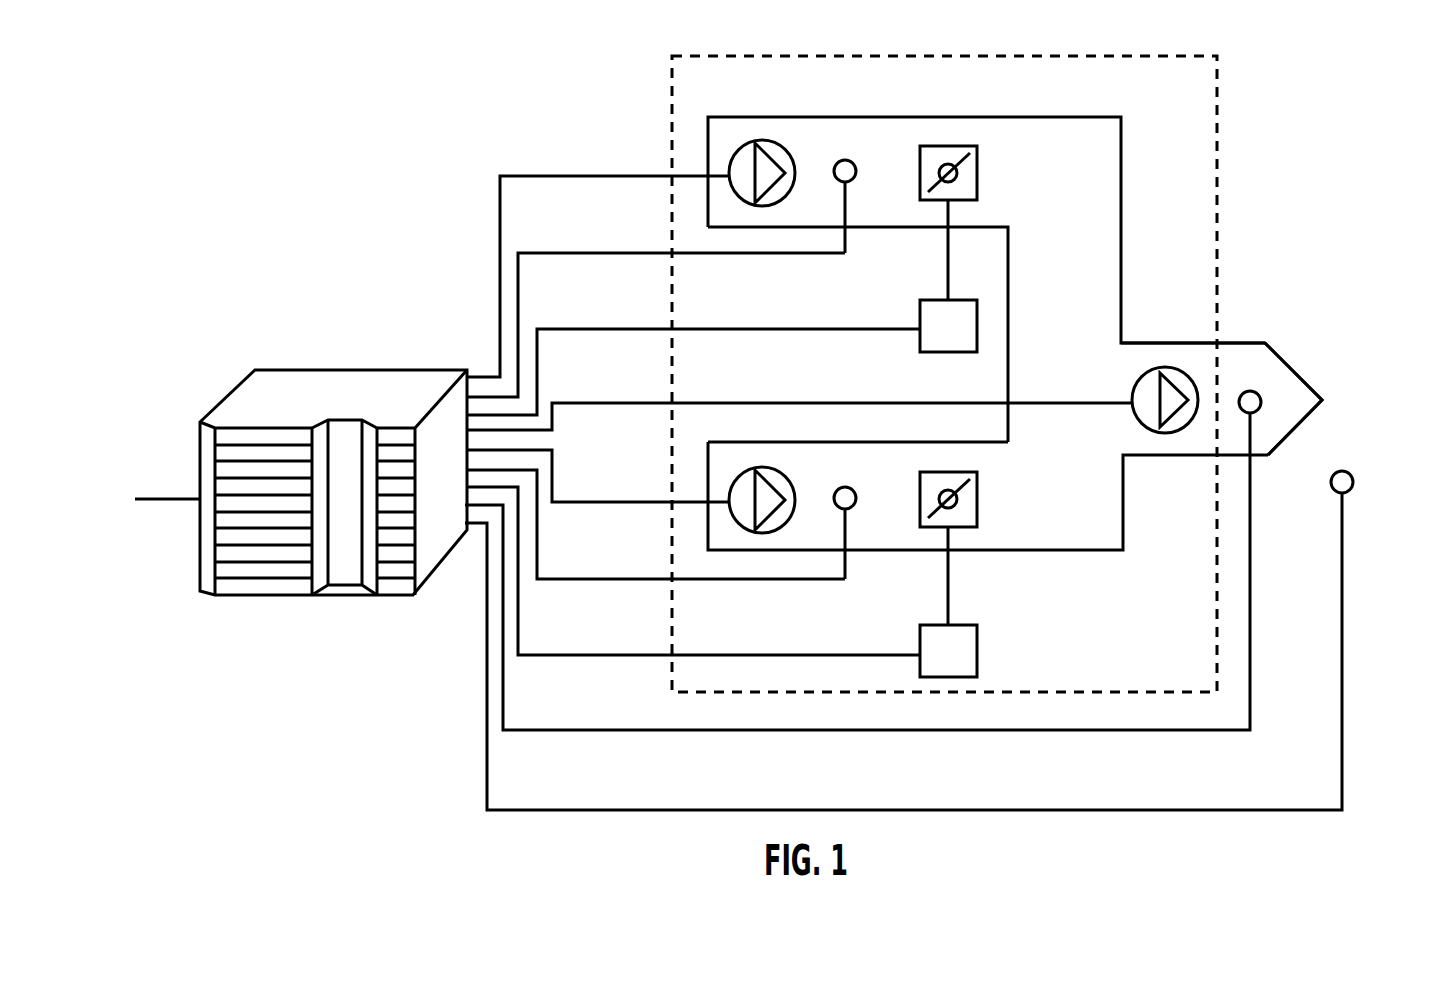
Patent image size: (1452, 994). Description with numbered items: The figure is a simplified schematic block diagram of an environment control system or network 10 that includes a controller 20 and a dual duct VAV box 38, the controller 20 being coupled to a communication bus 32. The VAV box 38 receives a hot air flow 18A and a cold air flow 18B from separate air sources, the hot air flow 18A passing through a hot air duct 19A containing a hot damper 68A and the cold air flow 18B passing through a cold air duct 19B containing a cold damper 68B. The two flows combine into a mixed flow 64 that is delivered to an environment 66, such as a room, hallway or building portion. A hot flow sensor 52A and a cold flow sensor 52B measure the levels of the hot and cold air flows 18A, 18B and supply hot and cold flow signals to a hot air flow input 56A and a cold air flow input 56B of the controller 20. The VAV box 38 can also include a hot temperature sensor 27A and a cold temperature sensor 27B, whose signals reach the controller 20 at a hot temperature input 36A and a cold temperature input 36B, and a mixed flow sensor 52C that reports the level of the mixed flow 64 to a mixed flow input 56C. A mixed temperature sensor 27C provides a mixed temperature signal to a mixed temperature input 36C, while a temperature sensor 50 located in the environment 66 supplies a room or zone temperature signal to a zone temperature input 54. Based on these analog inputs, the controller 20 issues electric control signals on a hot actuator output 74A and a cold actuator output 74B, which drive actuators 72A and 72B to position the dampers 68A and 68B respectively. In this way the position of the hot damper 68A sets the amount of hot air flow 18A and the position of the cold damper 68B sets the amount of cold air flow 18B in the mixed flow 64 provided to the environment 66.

The environment control system 10 is at (406, 184).
The controller 20 is at (382, 371).
The communication bus 32 is at (197, 497).
The dual duct VAV box 38 is at (1082, 56).
The hot flow sensor 52A is at (782, 141).
The cold flow sensor 52B is at (782, 468).
The mixed flow sensor 52C is at (1163, 365).
The hot air flow input 56A is at (588, 172).
The cold air flow input 56B is at (588, 500).
The mixed flow input 56C is at (588, 401).
The hot temperature input 36A is at (588, 251).
The cold temperature input 36B is at (588, 577).
The mixed temperature input 36C is at (588, 728).
The hot actuator output 74A is at (588, 327).
The cold actuator output 74B is at (588, 653).
The hot temperature sensor 27A is at (856, 164).
The cold temperature sensor 27B is at (856, 490).
The mixed temperature sensor 27C is at (1259, 395).
The hot damper 68A is at (937, 146).
The cold damper 68B is at (937, 472).
The hot actuator 72A is at (970, 300).
The cold actuator 72B is at (970, 625).
The hot air flow 18A is at (1052, 188).
The cold air flow 18B is at (1050, 478).
The hot air duct 19A is at (887, 229).
The cold air duct 19B is at (887, 551).
The mixed flow 64 is at (1240, 357).
The environment 66 is at (1362, 389).
The temperature sensor 50 is at (1352, 475).
The zone temperature input 54 is at (588, 808).